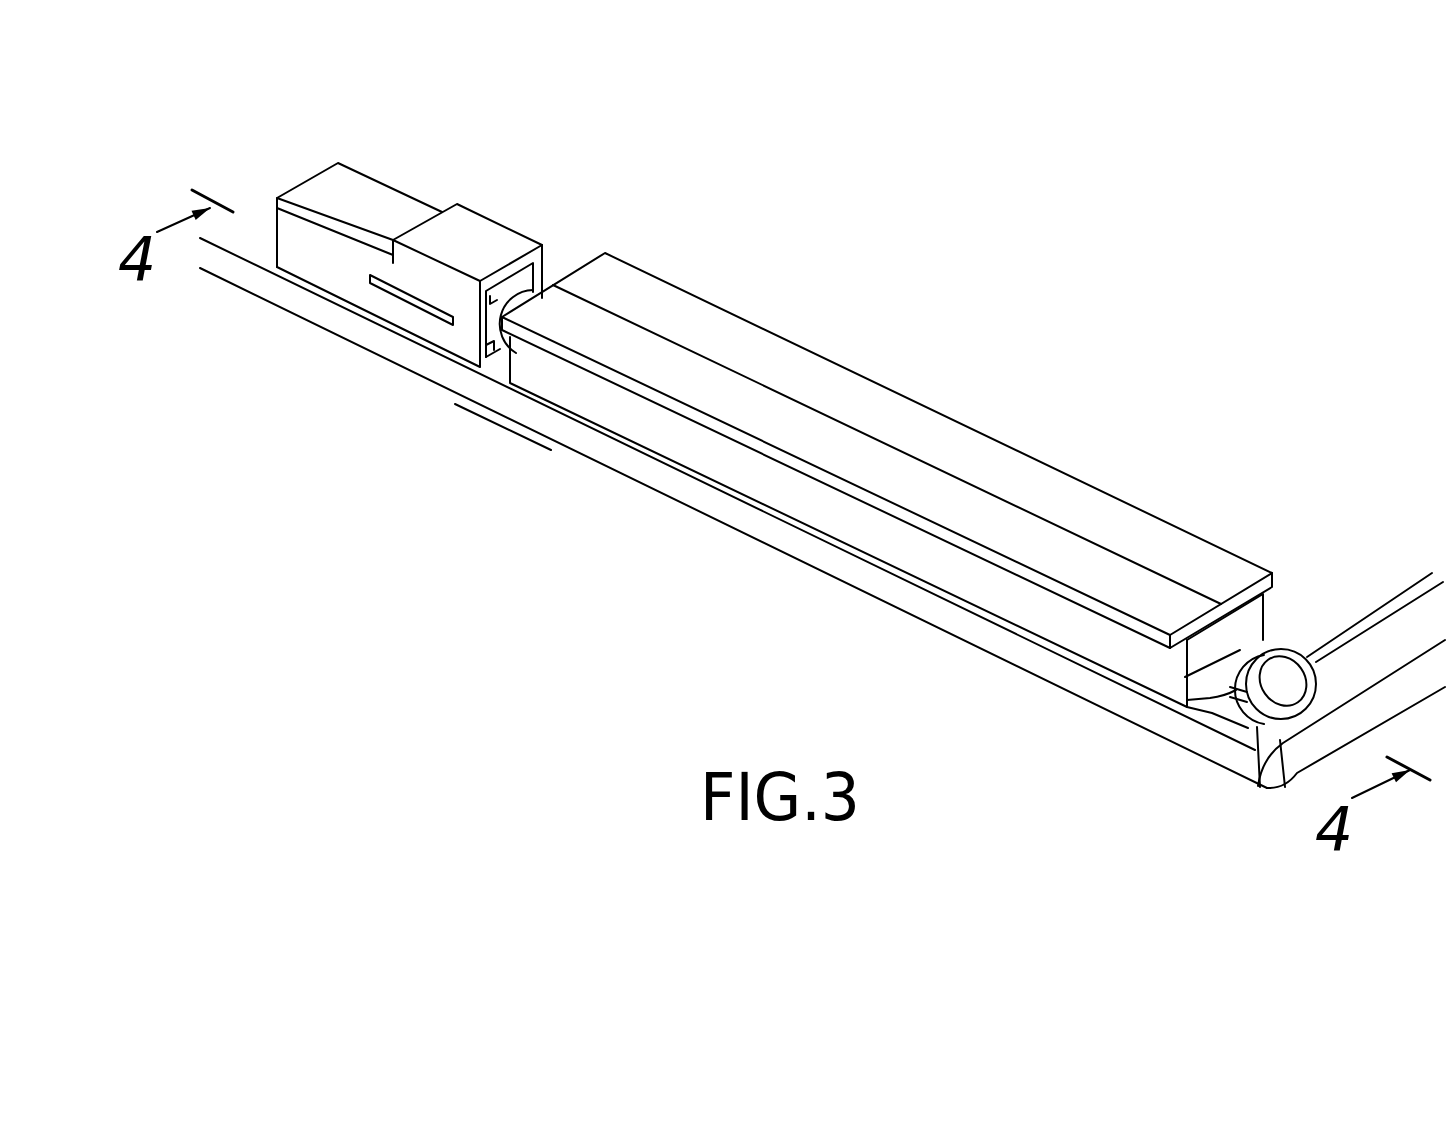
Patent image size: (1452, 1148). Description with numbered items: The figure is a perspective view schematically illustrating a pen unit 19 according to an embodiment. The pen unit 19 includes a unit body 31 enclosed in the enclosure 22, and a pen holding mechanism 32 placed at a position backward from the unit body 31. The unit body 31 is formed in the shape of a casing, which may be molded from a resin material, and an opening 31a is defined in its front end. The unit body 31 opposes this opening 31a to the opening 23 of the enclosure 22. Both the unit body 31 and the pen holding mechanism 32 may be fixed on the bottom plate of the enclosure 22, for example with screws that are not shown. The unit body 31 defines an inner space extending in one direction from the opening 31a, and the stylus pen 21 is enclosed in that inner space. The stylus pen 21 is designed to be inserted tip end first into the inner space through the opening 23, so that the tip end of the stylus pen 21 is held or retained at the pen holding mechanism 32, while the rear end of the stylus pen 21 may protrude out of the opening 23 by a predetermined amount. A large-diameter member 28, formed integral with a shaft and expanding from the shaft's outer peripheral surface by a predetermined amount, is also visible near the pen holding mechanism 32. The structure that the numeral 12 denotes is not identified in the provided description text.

The panel 12 is at (678, 490).
The pen unit 19 is at (932, 383).
The stylus pen 21 is at (1273, 650).
The enclosure 22 is at (985, 633).
The opening 23 is at (1250, 757).
The large-diameter member 28 is at (530, 292).
The unit body 31 is at (1060, 478).
The opening 31a is at (1279, 590).
The pen holding mechanism 32 is at (484, 232).